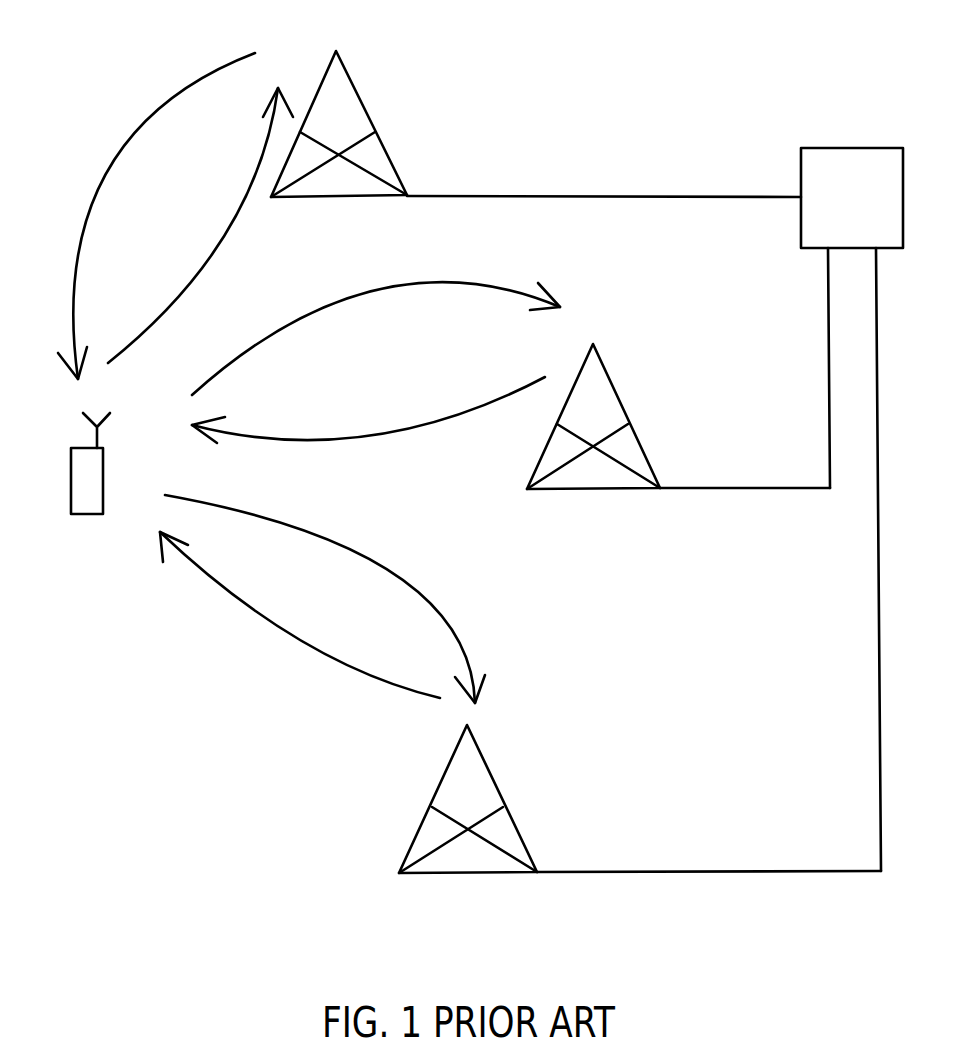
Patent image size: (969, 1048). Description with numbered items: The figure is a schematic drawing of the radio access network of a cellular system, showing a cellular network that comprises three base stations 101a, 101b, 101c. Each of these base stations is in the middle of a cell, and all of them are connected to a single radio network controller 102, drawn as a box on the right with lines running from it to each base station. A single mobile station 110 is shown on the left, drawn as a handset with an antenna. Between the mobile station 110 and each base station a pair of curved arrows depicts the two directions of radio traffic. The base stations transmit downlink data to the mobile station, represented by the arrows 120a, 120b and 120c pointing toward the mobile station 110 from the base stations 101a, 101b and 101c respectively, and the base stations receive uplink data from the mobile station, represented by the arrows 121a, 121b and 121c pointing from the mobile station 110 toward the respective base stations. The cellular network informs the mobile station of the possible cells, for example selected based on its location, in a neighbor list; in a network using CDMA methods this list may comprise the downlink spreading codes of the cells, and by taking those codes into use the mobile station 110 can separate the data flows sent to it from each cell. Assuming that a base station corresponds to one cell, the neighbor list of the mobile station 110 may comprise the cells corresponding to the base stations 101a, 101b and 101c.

The radio network controller 102 is at (655, 492).
The base station 101a is at (339, 138).
The base station 101b is at (678, 435).
The base station 101c is at (640, 817).
The mobile station 110 is at (83, 484).
The downlink data arrow 120a is at (149, 216).
The uplink data arrow 121a is at (200, 225).
The downlink data arrow 120b is at (368, 422).
The uplink data arrow 121b is at (376, 338).
The downlink data arrow 120c is at (300, 615).
The uplink data arrow 121c is at (325, 599).